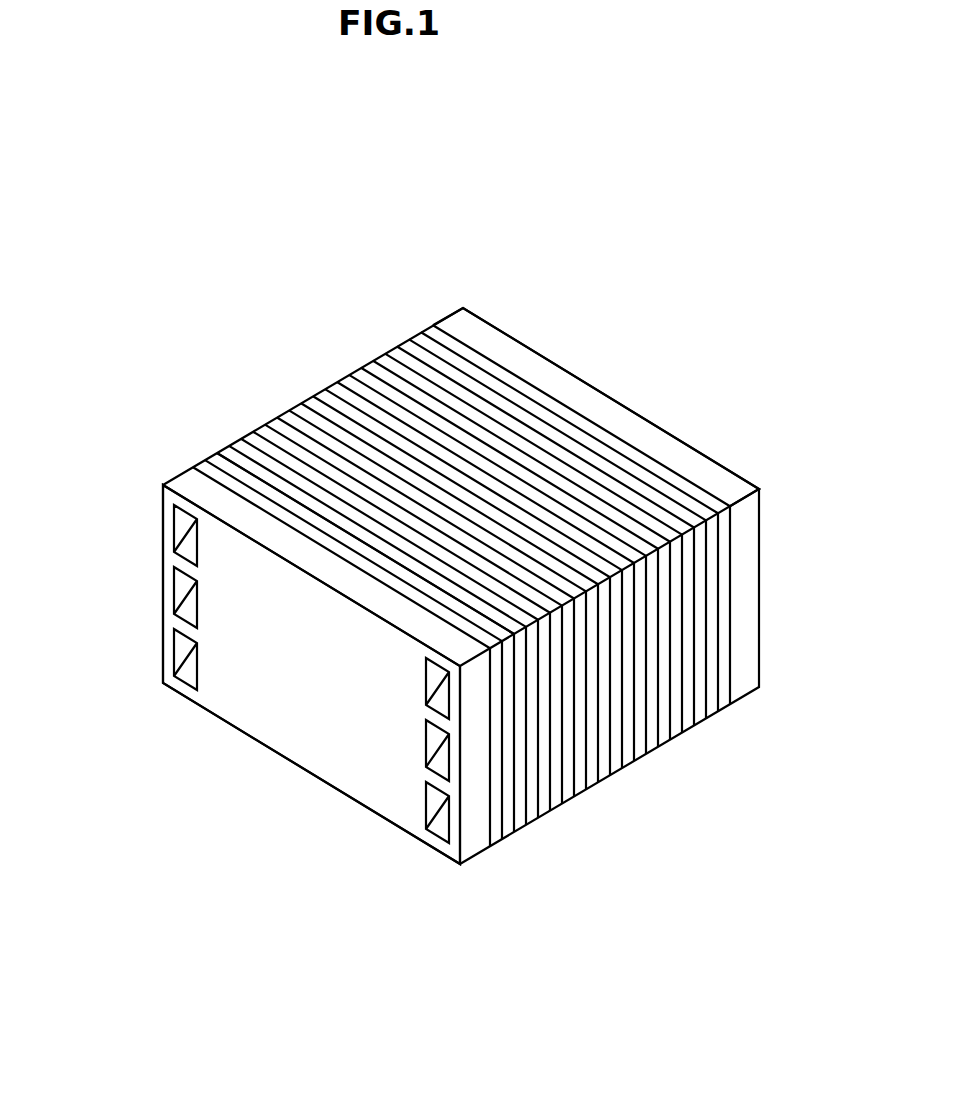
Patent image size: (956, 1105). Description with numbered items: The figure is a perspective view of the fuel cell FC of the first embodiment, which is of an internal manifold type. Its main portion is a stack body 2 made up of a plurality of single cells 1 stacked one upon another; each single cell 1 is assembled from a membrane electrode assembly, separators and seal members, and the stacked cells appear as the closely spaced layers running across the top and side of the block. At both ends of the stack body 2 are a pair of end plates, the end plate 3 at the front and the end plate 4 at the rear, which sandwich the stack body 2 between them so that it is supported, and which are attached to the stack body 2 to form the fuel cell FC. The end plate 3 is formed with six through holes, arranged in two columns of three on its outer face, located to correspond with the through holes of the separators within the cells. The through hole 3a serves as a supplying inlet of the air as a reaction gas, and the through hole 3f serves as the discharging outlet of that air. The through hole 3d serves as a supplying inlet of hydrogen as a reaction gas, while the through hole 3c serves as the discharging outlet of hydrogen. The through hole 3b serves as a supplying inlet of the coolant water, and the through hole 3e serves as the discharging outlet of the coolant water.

The fuel cell FC is at (151, 316).
The single cell 1 is at (265, 430).
The stack body 2 is at (323, 377).
The end plate 3 is at (184, 481).
The through hole 3a is at (182, 539).
The through hole 3b is at (182, 601).
The through hole 3c is at (182, 663).
The through hole 3d is at (445, 705).
The through hole 3e is at (442, 766).
The through hole 3f is at (432, 813).
The end plate 4 is at (495, 342).